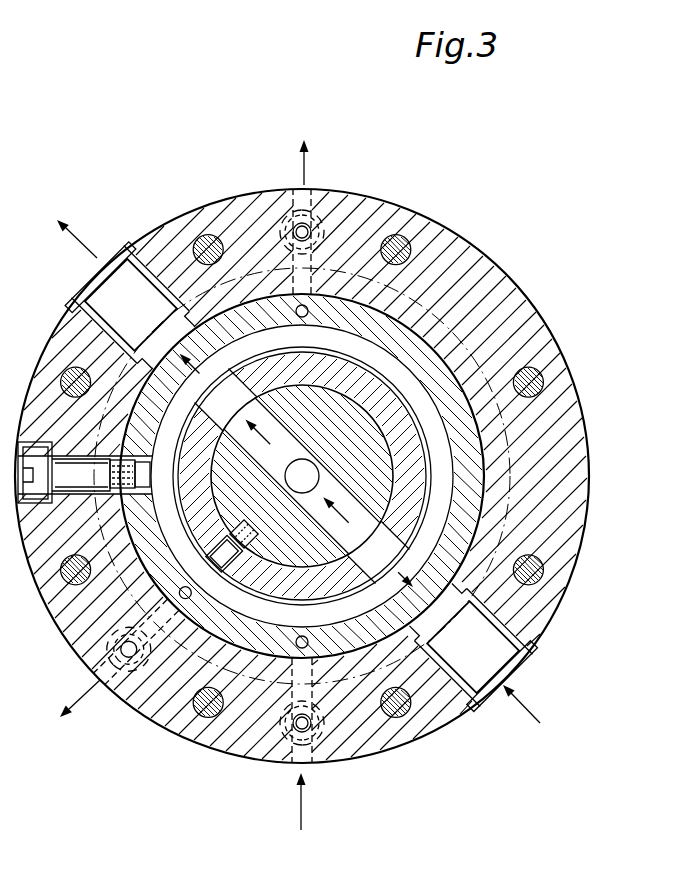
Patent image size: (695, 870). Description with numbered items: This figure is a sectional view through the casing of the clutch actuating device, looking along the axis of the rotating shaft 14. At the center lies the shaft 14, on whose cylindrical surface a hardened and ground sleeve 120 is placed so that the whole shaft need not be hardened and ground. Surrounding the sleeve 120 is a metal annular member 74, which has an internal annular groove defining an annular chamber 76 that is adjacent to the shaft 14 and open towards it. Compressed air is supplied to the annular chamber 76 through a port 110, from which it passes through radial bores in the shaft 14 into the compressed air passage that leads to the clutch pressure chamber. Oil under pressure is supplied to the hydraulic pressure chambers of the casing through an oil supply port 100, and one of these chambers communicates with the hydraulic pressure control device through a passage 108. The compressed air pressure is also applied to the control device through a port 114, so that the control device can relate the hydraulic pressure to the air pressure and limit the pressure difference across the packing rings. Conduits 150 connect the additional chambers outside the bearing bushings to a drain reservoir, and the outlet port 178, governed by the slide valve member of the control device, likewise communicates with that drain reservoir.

The shaft 14 is at (302, 476).
The metal annular member 74 is at (232, 326).
The annular chamber 76 is at (302, 476).
The oil supply port 100 is at (301, 756).
The passage 108 is at (306, 203).
The port 110 is at (490, 658).
The port 114 is at (125, 284).
The sleeve 120 is at (302, 476).
The conduits 150 is at (131, 654).
The outlet port 178 is at (99, 683).